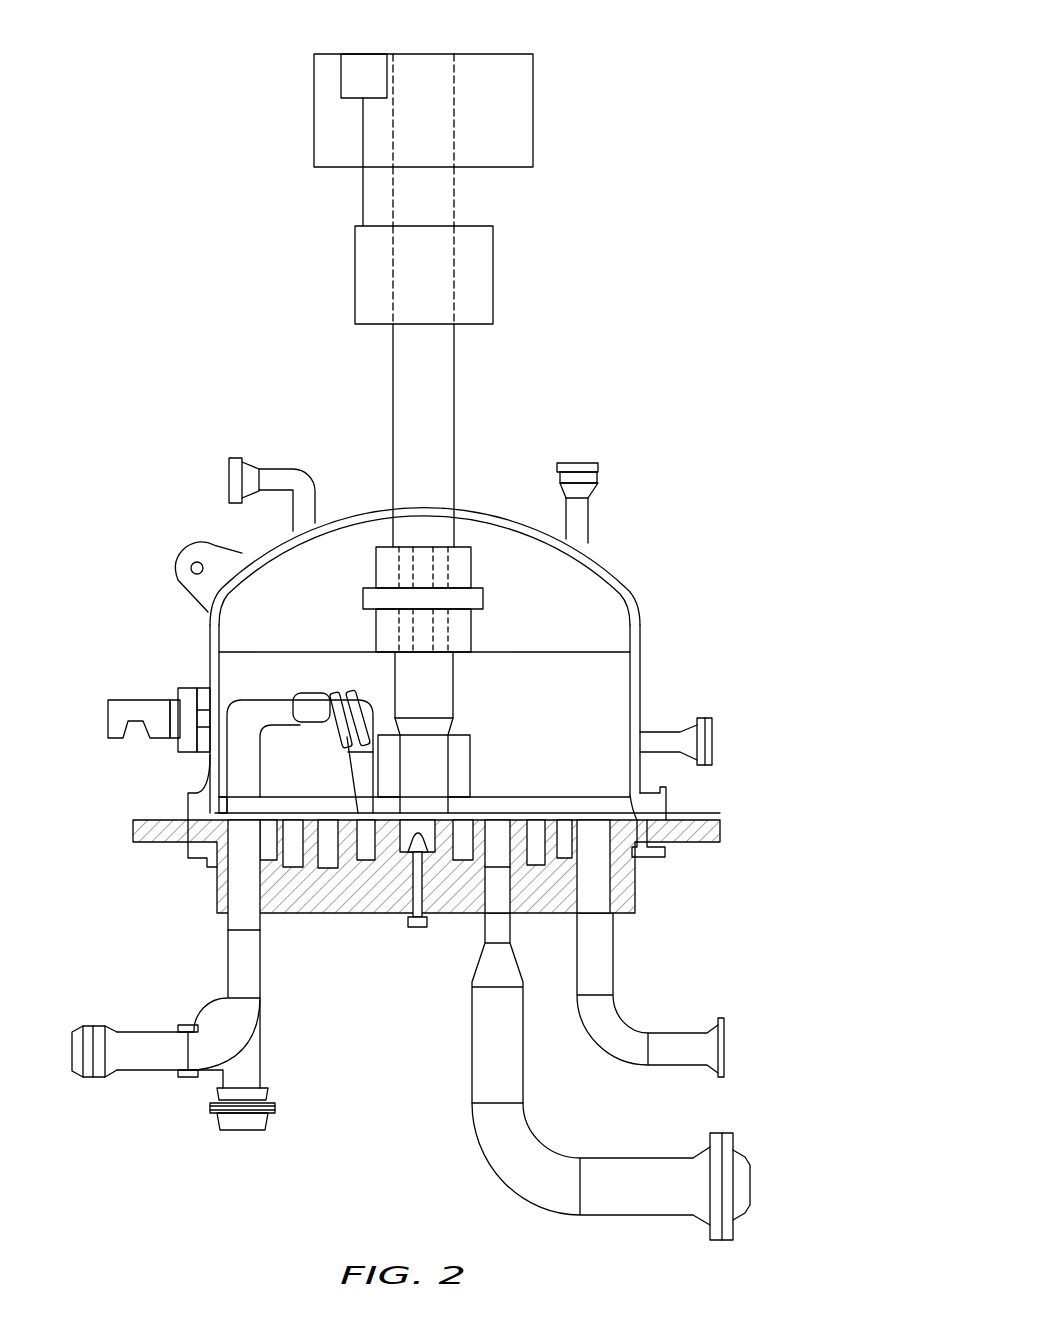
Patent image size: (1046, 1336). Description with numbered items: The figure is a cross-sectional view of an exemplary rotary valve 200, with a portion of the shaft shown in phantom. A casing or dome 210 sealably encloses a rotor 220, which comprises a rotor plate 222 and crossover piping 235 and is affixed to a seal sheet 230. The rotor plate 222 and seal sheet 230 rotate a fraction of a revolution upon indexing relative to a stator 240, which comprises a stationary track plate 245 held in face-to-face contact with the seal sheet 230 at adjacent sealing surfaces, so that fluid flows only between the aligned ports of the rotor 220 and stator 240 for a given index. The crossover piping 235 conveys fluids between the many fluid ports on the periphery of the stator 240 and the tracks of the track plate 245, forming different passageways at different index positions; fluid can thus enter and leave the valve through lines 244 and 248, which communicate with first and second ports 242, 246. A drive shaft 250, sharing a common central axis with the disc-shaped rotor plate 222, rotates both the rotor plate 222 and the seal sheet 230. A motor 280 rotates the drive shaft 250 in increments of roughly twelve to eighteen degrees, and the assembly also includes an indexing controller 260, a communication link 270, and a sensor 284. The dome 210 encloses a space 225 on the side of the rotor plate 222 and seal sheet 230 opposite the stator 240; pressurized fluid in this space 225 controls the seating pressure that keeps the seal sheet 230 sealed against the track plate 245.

The rotary valve 200 is at (805, 22).
The casing or dome 210 is at (623, 572).
The rotor 220 is at (625, 676).
The rotor plate 222 is at (290, 795).
The space 225 is at (550, 603).
The seal sheet 230 is at (506, 800).
The crossover piping 235 is at (277, 700).
The stator 240 is at (325, 914).
The first port 242 is at (228, 891).
The line 244 is at (226, 953).
The track plate 245 is at (557, 800).
The second port 246 is at (463, 900).
The line 248 is at (470, 1054).
The drive shaft 250 is at (455, 388).
The indexing controller 260 is at (494, 273).
The communication link 270 is at (363, 198).
The motor 280 is at (535, 109).
The sensor 284 is at (362, 53).